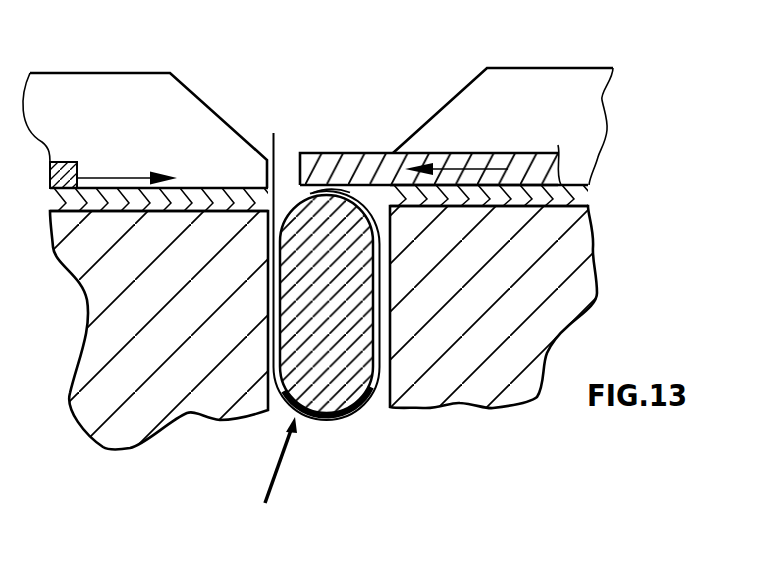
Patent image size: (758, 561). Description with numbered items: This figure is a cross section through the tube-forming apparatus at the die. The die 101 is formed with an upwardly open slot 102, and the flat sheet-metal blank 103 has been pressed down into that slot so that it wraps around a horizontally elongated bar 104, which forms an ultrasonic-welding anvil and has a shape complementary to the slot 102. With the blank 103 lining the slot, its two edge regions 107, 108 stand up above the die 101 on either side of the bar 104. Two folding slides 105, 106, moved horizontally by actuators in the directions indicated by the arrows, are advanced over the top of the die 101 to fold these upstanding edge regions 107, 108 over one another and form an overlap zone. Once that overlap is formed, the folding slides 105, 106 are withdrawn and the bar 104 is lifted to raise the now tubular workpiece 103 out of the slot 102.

The die 101 is at (583, 180).
The slot 102 is at (268, 413).
The sheet-metal blank 103 is at (263, 482).
The bar 104 is at (340, 392).
The folding slide 105 is at (378, 167).
The folding slide 106 is at (60, 162).
The upstanding edge region 107 is at (330, 183).
The upstanding edge region 108 is at (274, 133).